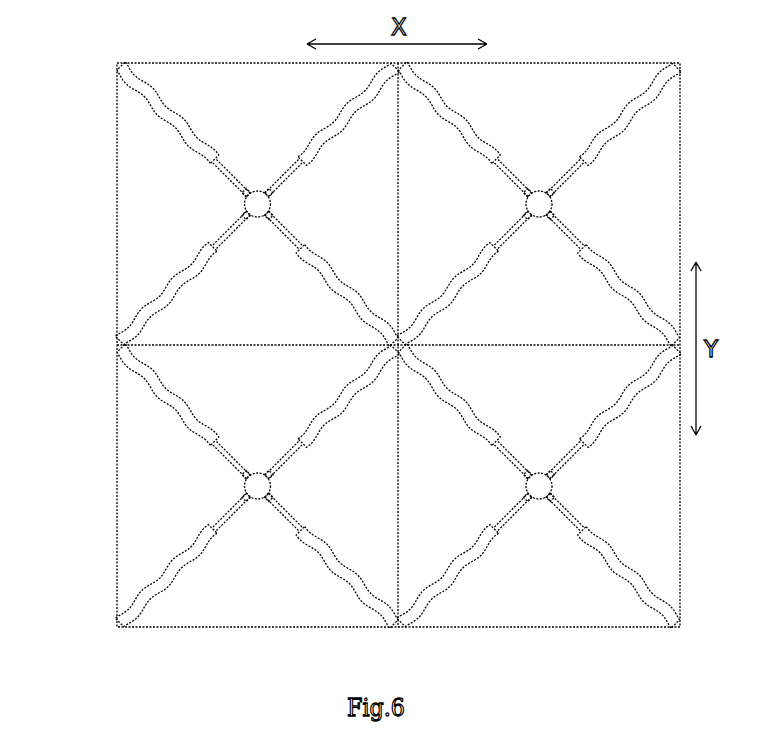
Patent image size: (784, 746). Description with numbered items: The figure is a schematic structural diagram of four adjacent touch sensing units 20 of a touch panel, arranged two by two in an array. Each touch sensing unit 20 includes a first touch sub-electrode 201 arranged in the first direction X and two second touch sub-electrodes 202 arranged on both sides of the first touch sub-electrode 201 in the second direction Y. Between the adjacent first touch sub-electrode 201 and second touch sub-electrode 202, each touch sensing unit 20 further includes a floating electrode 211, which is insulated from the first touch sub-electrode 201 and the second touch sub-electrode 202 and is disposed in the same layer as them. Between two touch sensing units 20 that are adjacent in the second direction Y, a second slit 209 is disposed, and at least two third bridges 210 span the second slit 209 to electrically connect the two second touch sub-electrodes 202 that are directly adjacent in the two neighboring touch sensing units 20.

The touch sensing unit 20 is at (72, 490).
The first touch sub-electrode 201 is at (396, 348).
The second touch sub-electrode 202 is at (396, 346).
The second slit 209 is at (550, 352).
The third bridge 210 is at (602, 345).
The floating electrode 211 is at (145, 90).